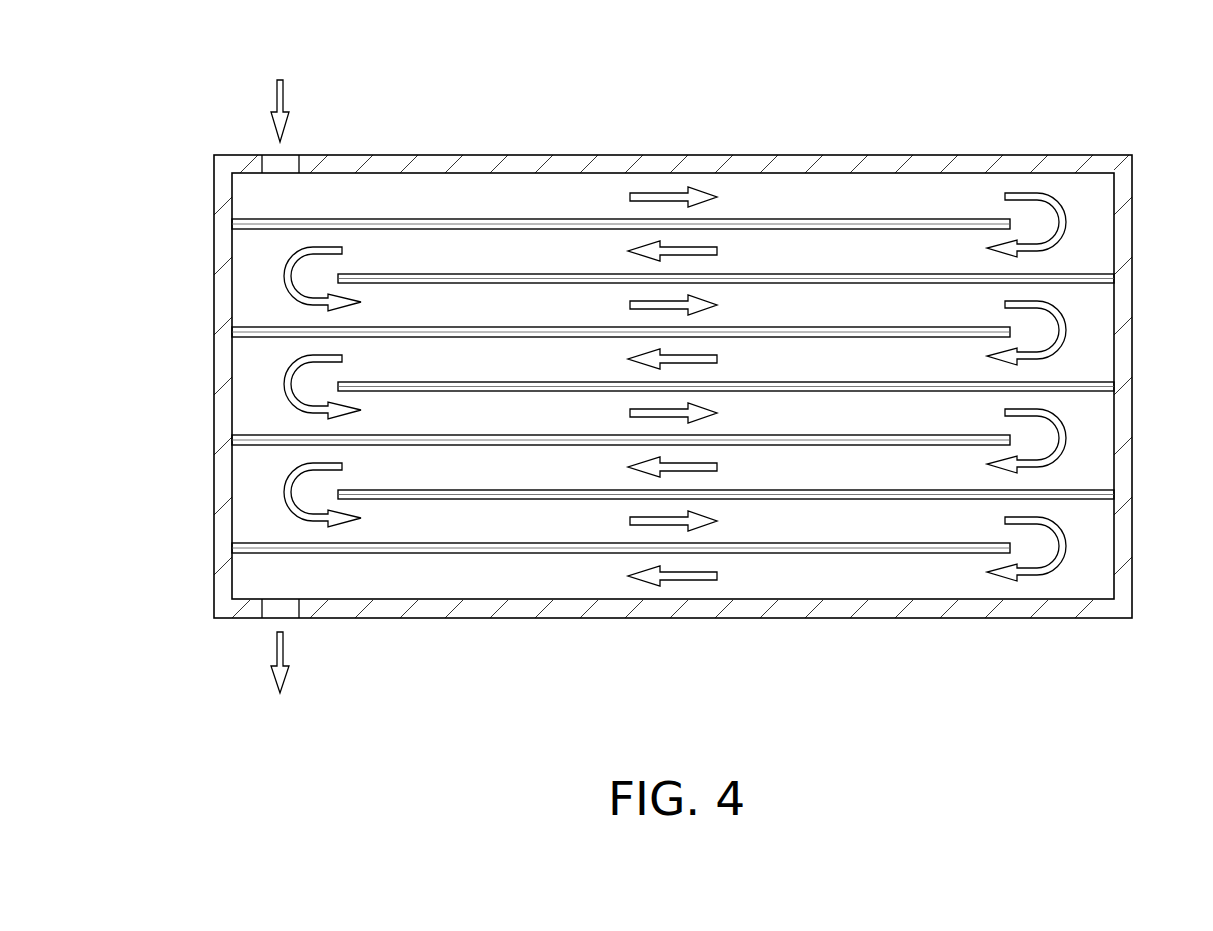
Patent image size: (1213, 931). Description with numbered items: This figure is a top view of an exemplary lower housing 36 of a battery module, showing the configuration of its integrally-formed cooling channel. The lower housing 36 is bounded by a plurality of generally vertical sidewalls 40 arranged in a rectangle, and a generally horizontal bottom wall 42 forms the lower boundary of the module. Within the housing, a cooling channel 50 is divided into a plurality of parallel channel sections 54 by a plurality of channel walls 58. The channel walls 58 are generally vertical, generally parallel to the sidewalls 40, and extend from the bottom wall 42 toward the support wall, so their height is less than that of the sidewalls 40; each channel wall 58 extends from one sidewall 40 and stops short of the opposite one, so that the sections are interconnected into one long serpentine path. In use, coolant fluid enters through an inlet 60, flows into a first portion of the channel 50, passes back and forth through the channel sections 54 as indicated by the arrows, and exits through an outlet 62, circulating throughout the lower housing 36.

The lower housing 36 is at (1132, 204).
The sidewalls 40 is at (572, 162).
The bottom wall 42 is at (845, 580).
The channel 50 is at (788, 200).
The channel sections 54 is at (527, 587).
The channel walls 58 is at (984, 218).
The inlet 60 is at (280, 97).
The outlet 62 is at (280, 679).